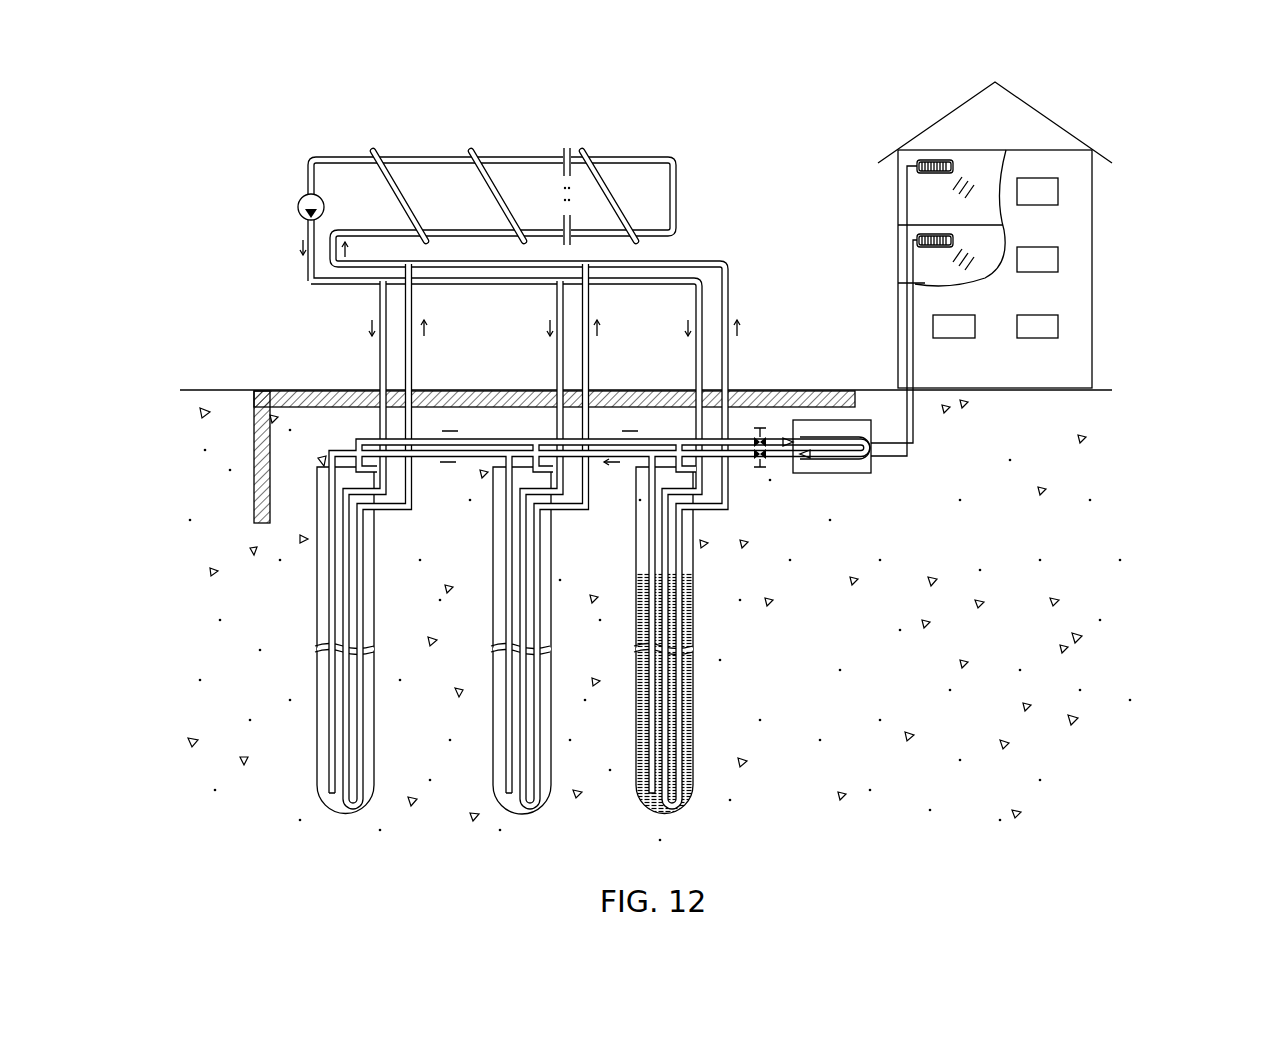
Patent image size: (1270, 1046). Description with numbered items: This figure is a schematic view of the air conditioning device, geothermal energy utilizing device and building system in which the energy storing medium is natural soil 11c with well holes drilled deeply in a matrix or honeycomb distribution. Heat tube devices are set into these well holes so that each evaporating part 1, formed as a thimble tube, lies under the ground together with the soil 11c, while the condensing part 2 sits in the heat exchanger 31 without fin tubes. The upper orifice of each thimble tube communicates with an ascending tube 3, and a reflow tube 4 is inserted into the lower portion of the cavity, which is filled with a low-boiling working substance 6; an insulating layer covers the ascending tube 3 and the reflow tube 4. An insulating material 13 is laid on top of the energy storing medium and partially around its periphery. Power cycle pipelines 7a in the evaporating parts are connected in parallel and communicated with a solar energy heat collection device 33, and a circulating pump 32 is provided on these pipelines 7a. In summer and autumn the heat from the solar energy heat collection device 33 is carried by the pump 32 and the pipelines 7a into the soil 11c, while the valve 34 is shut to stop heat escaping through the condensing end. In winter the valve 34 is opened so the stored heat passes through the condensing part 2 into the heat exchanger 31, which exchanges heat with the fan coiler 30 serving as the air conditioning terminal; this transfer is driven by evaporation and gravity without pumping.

The evaporating part 1 is at (622, 435).
The condensing part 2 is at (823, 455).
The ascending tube 3 is at (598, 561).
The reflow tube 4 is at (647, 528).
The working substance 6 is at (688, 720).
The power cycle pipelines 7a is at (559, 431).
The natural soil 11c is at (930, 650).
The insulating material 13 is at (740, 392).
The fan coiler 30 is at (933, 163).
The heat exchanger 31 is at (840, 471).
The circulating pump 32 is at (308, 203).
The solar energy heat collection device 33 is at (622, 157).
The valve 34 is at (762, 432).